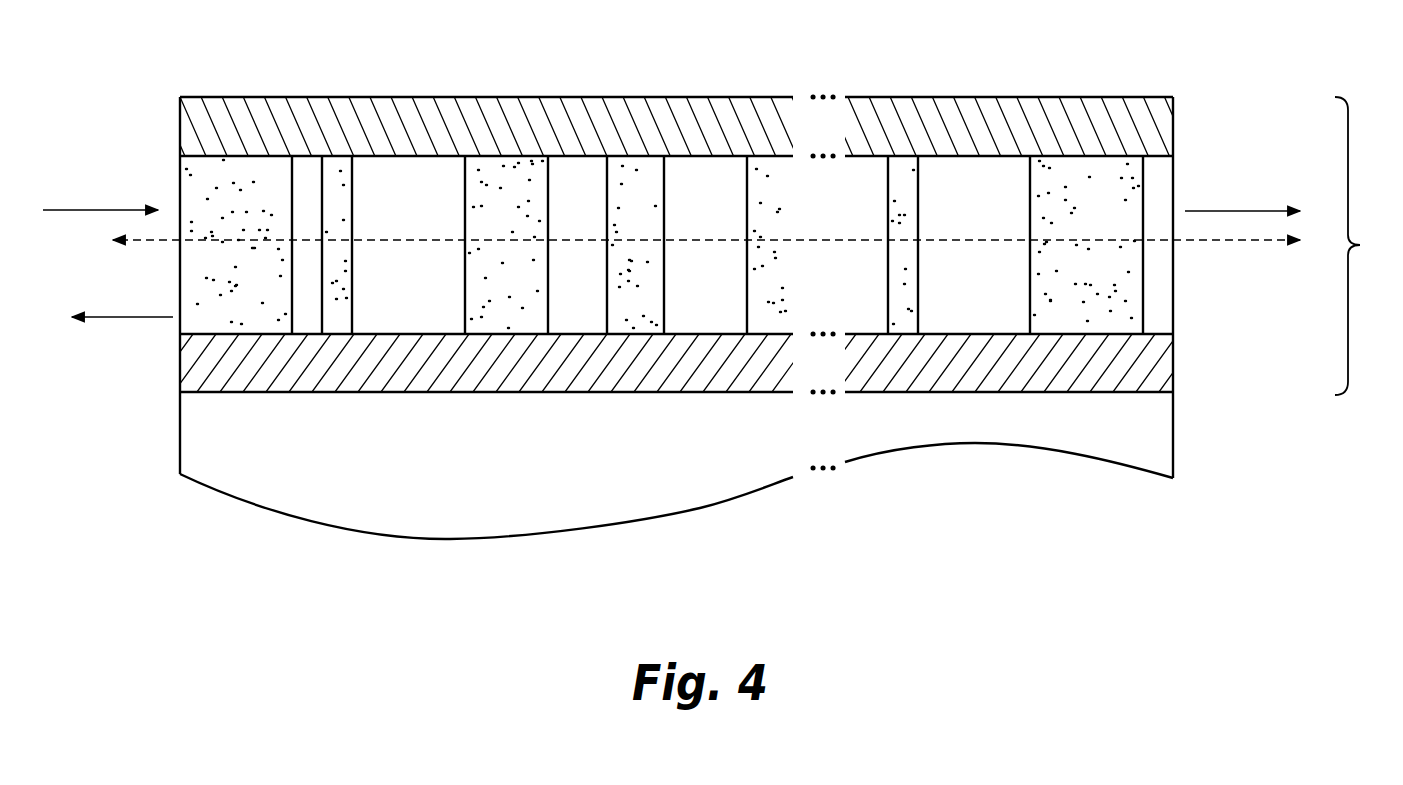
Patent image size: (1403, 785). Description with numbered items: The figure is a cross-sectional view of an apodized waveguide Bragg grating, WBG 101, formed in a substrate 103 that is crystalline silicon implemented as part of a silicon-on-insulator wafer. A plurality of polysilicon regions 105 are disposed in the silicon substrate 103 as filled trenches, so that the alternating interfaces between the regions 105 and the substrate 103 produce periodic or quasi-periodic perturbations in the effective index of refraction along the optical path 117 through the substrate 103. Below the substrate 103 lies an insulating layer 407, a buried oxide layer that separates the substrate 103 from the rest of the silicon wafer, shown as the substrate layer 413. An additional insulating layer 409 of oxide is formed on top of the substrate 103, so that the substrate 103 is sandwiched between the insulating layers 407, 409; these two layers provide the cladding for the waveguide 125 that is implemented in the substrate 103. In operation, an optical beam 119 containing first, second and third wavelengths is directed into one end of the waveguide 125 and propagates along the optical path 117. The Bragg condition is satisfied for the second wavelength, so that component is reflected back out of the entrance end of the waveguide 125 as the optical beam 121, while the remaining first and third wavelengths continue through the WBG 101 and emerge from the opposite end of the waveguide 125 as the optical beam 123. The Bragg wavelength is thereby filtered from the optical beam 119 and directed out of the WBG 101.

The waveguide Bragg grating (WBG) 101 is at (1231, 79).
The substrate 103 is at (992, 282).
The regions 105 is at (1105, 282).
The optical path 117 is at (130, 246).
The optical beam 119 is at (108, 212).
The optical beam (reflected) 121 is at (108, 320).
The optical beam (transmitted) 123 is at (1284, 210).
The waveguide 125 is at (1367, 246).
The insulating layer 407 is at (1165, 367).
The insulating layer 409 is at (1168, 135).
The substrate layer 413 is at (1158, 448).